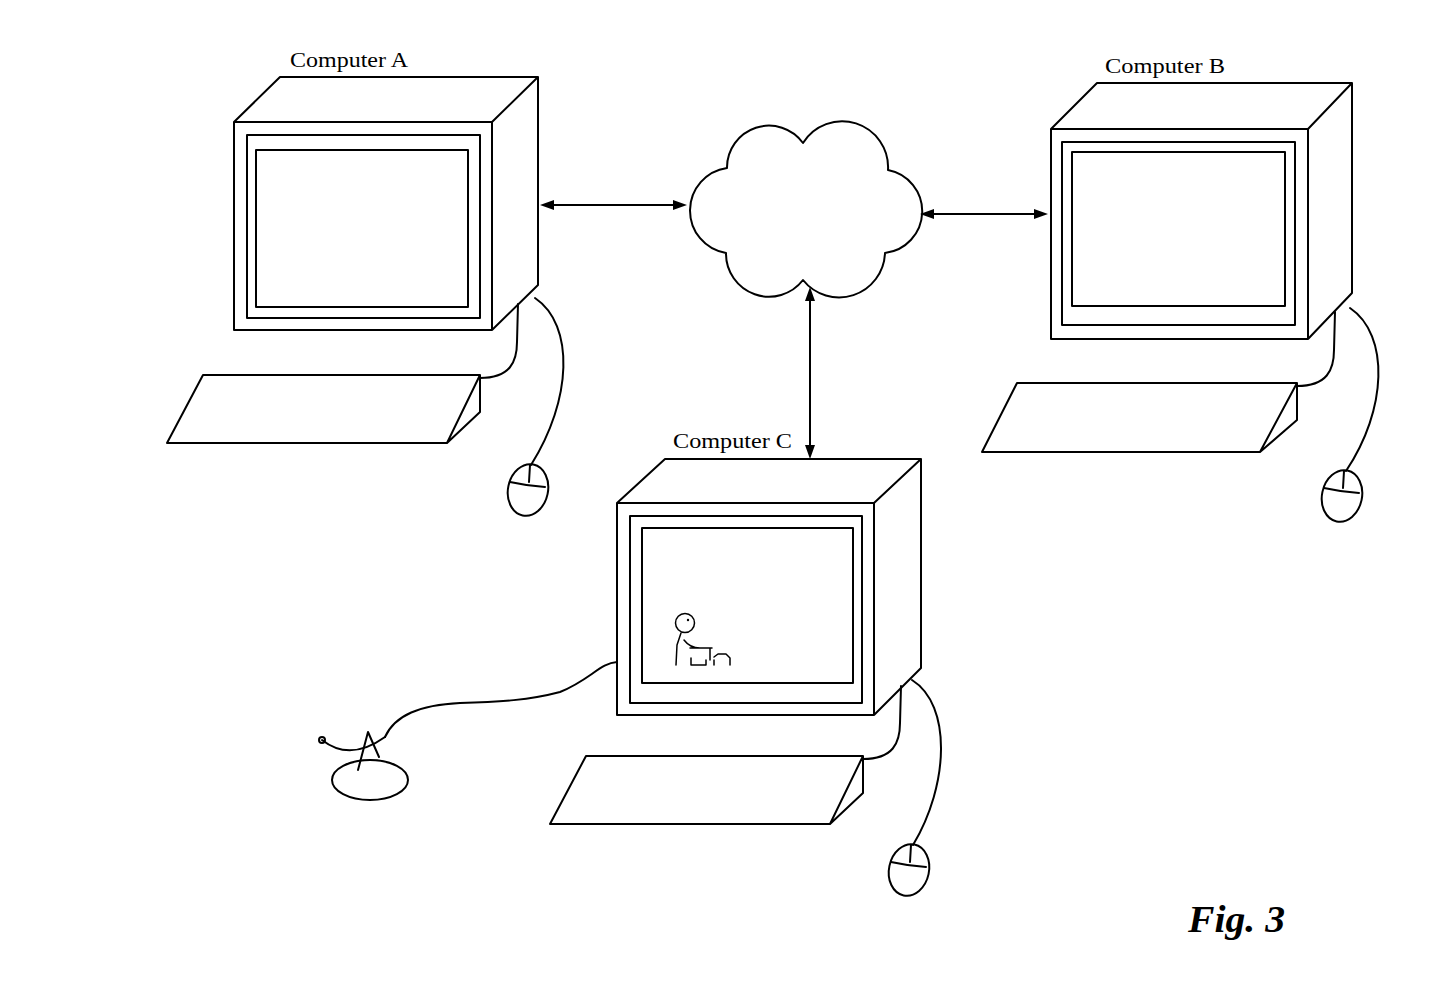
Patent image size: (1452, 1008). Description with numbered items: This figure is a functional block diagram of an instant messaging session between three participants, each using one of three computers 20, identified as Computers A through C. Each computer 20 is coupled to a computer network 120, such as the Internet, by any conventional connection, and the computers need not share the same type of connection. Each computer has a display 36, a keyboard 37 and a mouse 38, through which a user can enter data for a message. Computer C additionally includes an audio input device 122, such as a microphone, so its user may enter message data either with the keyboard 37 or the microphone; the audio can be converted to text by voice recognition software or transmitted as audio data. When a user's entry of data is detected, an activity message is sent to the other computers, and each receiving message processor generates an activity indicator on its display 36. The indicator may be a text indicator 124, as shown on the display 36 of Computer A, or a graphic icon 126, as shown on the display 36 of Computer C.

The computer 20 is at (442, 77).
The display 36 is at (472, 148).
The keyboard 37 is at (185, 407).
The mouse 38 is at (548, 493).
The computer network 120 is at (858, 130).
The audio input device 122 is at (322, 739).
The text indicator 124 is at (460, 285).
The graphic icon 126 is at (722, 648).